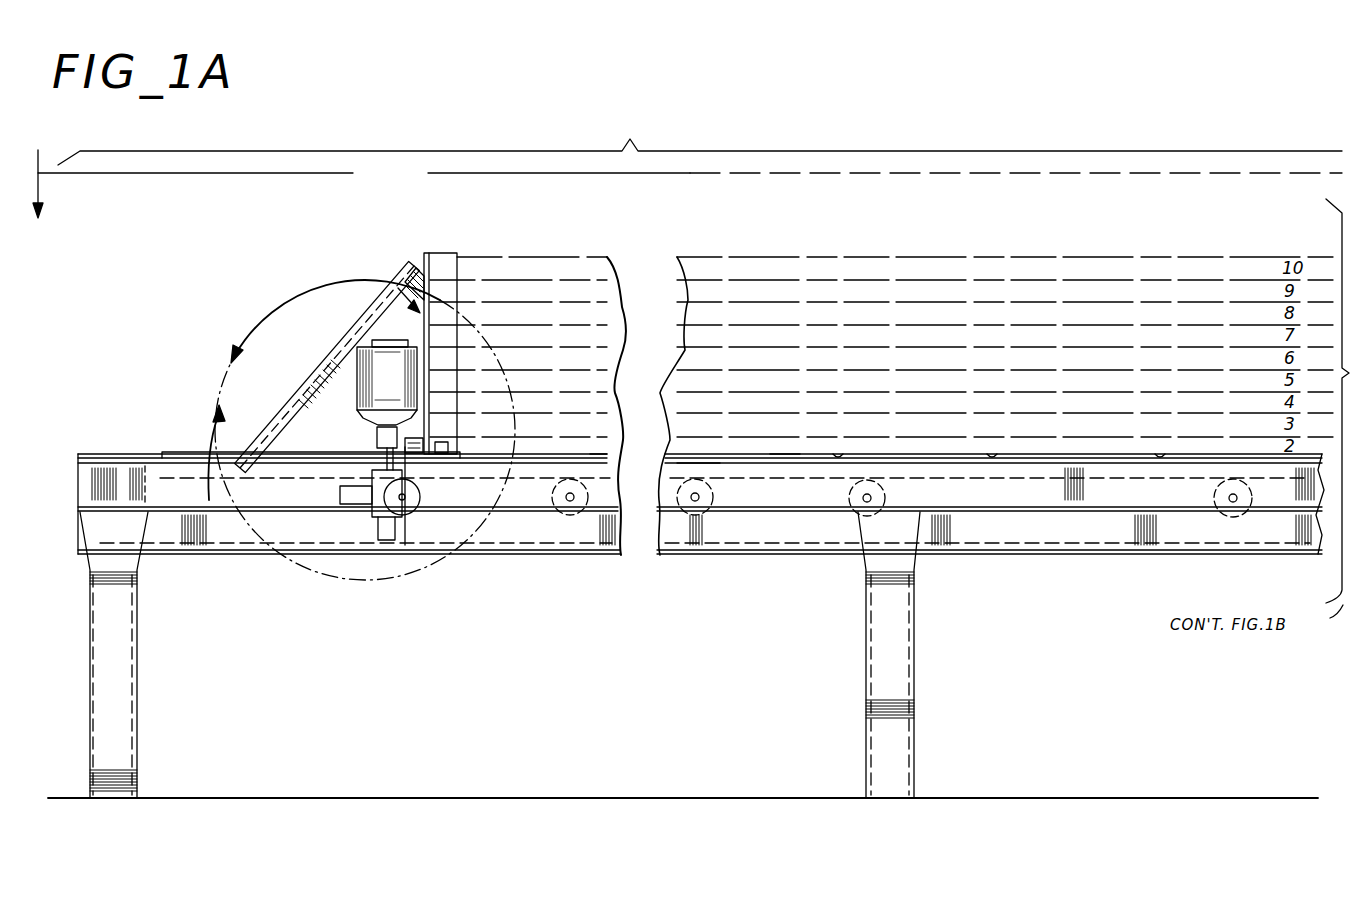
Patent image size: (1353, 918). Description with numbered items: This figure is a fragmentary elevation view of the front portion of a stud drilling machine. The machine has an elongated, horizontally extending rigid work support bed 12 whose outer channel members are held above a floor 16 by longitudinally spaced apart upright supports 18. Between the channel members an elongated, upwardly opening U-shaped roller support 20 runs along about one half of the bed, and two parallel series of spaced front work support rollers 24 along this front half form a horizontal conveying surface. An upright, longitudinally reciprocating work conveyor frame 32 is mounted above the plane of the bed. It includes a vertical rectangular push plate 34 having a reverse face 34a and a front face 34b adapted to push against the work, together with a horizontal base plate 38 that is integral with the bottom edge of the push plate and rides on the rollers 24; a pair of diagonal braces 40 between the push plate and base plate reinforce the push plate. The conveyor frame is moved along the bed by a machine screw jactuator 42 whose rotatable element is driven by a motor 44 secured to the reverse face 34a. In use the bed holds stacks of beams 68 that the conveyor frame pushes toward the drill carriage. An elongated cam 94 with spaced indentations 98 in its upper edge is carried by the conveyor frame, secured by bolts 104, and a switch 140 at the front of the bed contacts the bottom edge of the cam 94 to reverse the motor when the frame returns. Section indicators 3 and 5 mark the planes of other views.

The section line 3 is at (191, 196).
The section arrow 5 is at (217, 437).
The work support bed 12 is at (984, 458).
The floor 16 is at (628, 797).
The upright supports 18 is at (124, 672).
The roller support 20 is at (492, 540).
The front work support rollers 24 is at (694, 468).
The work conveyor frame 32 is at (406, 222).
The push plate 34 is at (402, 292).
The reverse face 34a is at (414, 272).
The front face 34b is at (436, 272).
The base plate 38 is at (287, 484).
The diagonal braces 40 is at (318, 368).
The machine screw jactuator 42 is at (378, 493).
The motor 44 is at (387, 382).
The beams 68 is at (862, 303).
The cam 94 is at (781, 455).
The indentations 98 is at (596, 456).
The bolts 104 is at (190, 454).
The switch 140 is at (445, 443).